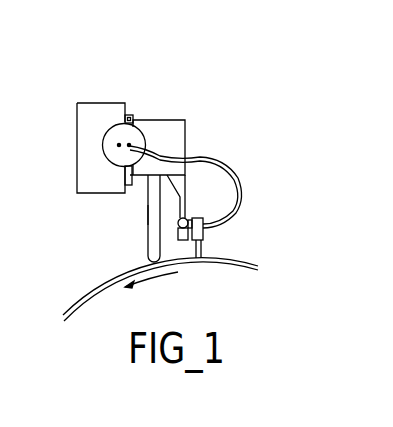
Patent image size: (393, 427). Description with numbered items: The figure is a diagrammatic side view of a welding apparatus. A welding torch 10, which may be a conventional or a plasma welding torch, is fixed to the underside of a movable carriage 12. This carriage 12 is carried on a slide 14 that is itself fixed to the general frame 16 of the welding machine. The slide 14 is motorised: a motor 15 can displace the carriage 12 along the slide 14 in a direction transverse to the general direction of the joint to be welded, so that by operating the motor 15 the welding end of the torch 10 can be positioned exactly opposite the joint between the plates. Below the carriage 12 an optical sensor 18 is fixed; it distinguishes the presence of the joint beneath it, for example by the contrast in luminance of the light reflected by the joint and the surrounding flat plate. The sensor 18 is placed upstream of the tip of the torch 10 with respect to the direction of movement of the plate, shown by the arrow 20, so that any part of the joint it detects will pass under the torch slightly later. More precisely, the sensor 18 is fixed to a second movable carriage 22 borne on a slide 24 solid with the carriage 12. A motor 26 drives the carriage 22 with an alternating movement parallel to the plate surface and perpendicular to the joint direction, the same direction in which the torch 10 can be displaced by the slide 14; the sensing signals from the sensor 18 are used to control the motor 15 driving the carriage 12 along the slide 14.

The welding torch 10 is at (153, 237).
The movable carriage 12 is at (158, 127).
The slide 14 is at (131, 115).
The motor 15 is at (103, 137).
The general frame 16 is at (95, 112).
The optical sensor 18 is at (202, 245).
The arrow 20 is at (157, 274).
The movable carriage 22 is at (195, 220).
The slide 24 is at (186, 216).
The motor 26 is at (150, 213).